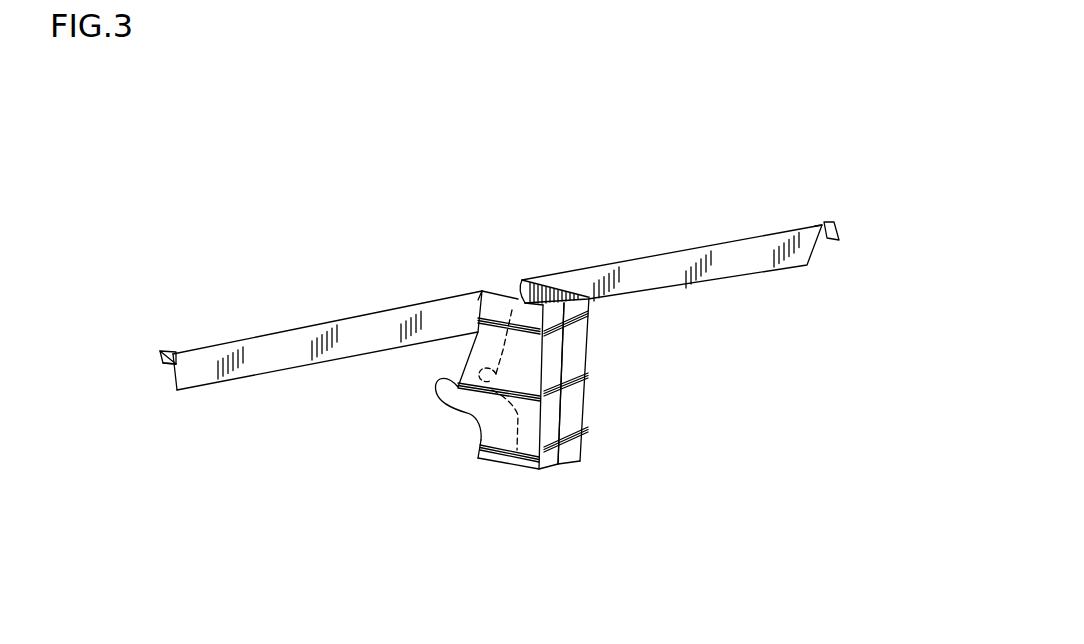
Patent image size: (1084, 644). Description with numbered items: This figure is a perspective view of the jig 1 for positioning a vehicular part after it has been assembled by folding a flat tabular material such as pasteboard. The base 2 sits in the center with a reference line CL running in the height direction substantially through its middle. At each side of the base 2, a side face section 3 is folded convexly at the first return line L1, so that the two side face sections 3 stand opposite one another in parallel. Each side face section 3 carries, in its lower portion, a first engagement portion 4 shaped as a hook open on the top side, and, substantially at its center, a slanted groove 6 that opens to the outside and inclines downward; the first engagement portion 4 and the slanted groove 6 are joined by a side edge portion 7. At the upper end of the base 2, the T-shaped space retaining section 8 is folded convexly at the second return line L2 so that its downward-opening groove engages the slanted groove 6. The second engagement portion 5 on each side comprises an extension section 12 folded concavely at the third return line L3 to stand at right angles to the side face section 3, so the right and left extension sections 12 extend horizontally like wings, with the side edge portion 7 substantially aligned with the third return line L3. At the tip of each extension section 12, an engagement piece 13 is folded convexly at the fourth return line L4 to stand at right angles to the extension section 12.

The jig 1 is at (168, 256).
The base 2 is at (573, 413).
The side face section 3 is at (500, 427).
The first engagement portion 4 is at (433, 393).
The second engagement portion 5 is at (166, 405).
The slanted groove 6 is at (400, 341).
The side edge portion 7 is at (460, 363).
The space retaining section 8 is at (519, 302).
The extension section 12 is at (260, 360).
The engagement piece 13 is at (160, 360).
The first return line L1 is at (538, 420).
The second return line L2 is at (578, 295).
The third return line L3 is at (473, 310).
The fourth return line L4 is at (170, 362).
The reference line CL is at (570, 442).